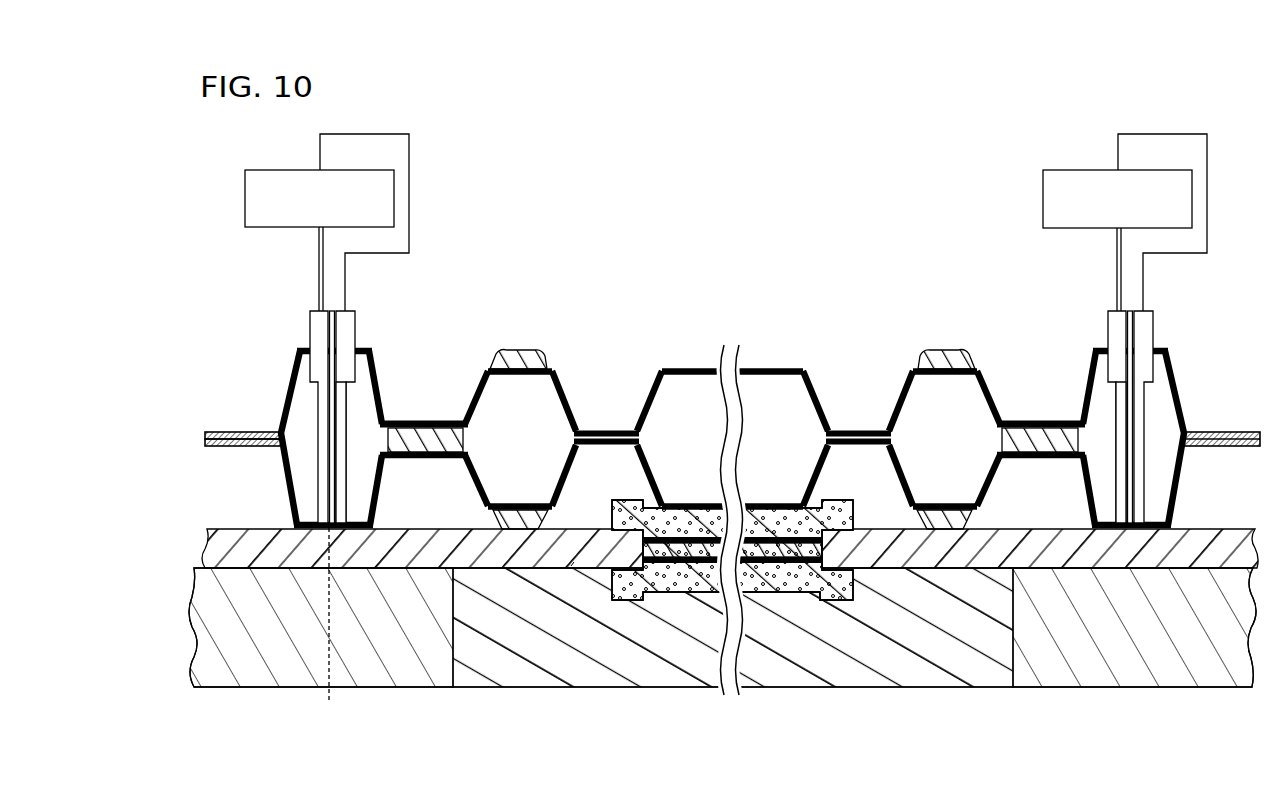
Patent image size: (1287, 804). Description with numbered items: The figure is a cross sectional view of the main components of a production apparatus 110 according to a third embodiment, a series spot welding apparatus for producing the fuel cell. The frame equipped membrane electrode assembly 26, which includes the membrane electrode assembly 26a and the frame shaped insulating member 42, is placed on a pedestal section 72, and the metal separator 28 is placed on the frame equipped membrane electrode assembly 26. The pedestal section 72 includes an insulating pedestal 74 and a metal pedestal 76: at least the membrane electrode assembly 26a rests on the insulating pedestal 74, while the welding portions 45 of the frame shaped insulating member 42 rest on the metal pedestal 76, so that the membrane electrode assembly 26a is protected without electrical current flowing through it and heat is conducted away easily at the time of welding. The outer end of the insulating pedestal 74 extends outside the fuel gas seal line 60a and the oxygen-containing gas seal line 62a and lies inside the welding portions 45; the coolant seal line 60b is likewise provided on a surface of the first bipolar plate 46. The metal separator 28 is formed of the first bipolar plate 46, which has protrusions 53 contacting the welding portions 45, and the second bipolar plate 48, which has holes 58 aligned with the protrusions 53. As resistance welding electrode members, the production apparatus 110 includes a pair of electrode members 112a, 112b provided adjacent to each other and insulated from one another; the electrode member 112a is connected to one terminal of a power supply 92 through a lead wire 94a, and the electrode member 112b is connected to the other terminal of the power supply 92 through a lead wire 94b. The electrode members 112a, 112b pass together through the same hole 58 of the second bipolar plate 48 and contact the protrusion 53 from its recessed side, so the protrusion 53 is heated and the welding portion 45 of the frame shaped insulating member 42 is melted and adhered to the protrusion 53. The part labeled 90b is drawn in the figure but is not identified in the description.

The production apparatus 110 is at (460, 113).
The power supply 92 is at (245, 186).
The lead wire 94a is at (318, 254).
The lead wire 94b is at (410, 184).
The electrode 90b is at (320, 330).
The hole 58 is at (308, 352).
The oxygen-containing gas seal line 62a is at (515, 355).
The coolant seal line 60b is at (420, 432).
The second bipolar plate 48 is at (278, 415).
The first bipolar plate 46 is at (278, 461).
The metal separator 28 is at (686, 441).
The protrusion 53 is at (323, 520).
The electrode member 112a is at (331, 486).
The electrode member 112b is at (348, 471).
The frame equipped membrane electrode assembly 26 is at (203, 540).
The membrane electrode assembly 26a is at (783, 594).
The pedestal section 72 is at (685, 651).
The metal pedestal 76 is at (258, 688).
The insulating pedestal 74 is at (670, 680).
The welding portion 45 is at (330, 629).
The fuel gas seal line 60a is at (513, 522).
The frame shaped insulating member 42 is at (578, 557).